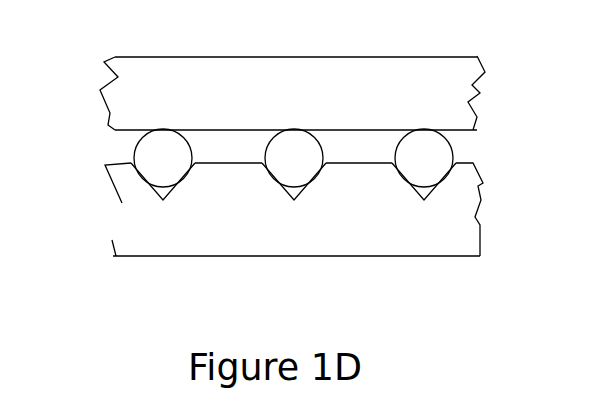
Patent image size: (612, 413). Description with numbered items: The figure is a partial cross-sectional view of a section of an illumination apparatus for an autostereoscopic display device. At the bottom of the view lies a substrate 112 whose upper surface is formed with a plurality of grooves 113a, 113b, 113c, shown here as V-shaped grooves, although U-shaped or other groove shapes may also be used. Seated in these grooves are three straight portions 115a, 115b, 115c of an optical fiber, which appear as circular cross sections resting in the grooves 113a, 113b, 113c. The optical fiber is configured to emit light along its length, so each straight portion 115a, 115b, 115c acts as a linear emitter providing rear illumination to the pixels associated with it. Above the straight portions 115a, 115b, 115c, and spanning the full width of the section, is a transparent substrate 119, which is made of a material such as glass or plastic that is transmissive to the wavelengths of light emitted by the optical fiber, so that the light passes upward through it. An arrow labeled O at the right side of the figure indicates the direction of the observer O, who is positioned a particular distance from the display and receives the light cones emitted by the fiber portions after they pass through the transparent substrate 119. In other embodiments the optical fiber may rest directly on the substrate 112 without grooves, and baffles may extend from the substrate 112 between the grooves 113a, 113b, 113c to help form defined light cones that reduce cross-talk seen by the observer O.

The transparent substrate 119 is at (150, 68).
The substrate 112 is at (162, 245).
The groove 113a is at (160, 198).
The groove 113b is at (290, 198).
The groove 113c is at (421, 198).
The straight portion of optical fiber 115a is at (138, 160).
The straight portion of optical fiber 115b is at (282, 164).
The straight portion of optical fiber 115c is at (415, 163).
The observer O is at (468, 152).